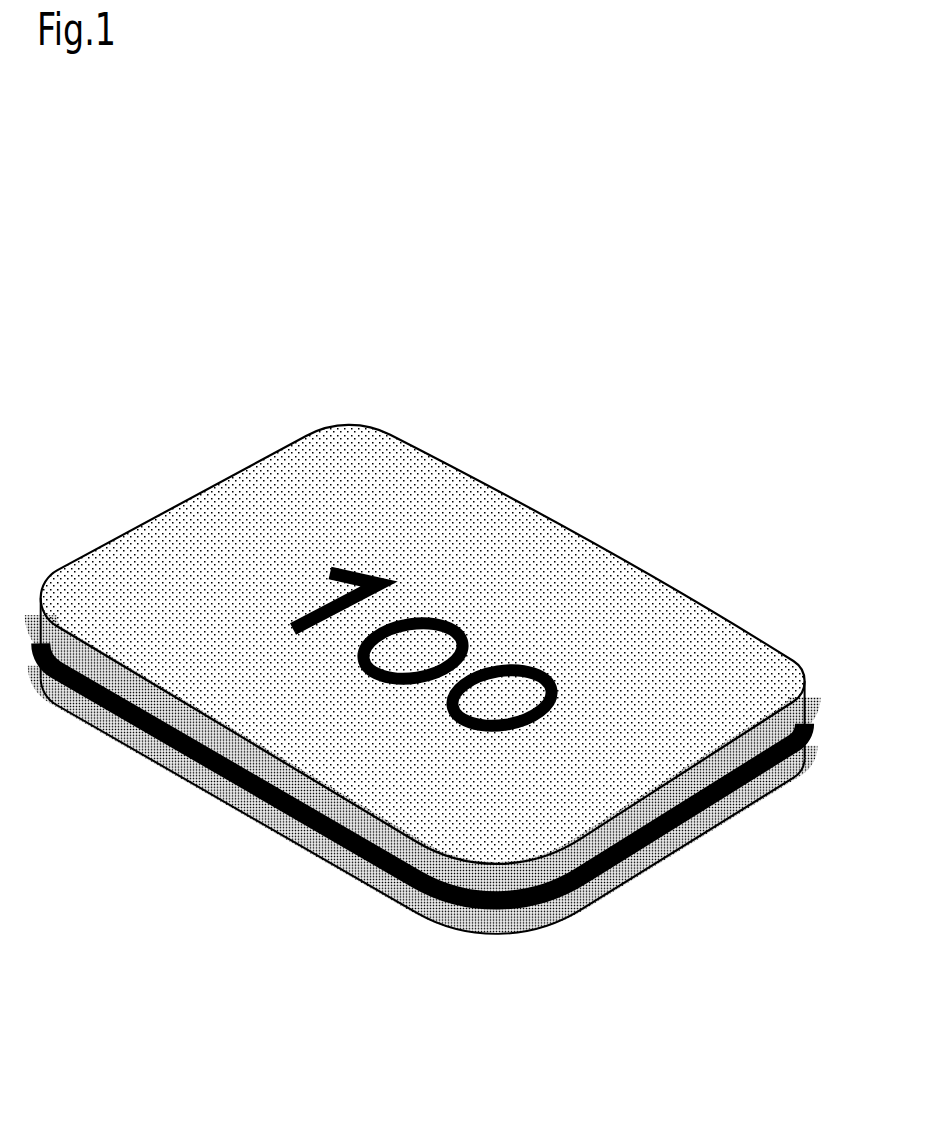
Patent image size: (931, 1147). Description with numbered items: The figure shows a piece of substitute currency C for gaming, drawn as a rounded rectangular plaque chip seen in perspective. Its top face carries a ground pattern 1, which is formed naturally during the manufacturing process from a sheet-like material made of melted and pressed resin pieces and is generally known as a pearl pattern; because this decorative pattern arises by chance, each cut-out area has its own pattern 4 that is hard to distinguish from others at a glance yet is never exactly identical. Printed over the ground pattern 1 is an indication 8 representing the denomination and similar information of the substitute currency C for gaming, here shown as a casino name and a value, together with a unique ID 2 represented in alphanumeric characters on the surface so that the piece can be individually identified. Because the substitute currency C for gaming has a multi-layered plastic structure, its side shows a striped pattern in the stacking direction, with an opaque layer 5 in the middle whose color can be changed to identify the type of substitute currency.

The substitute currency for gaming C is at (467, 473).
The ground pattern 1 is at (563, 550).
The pattern 4 is at (648, 603).
The opaque layer 5 is at (807, 750).
The indication 8 is at (599, 641).
The unique ID 2 is at (283, 696).